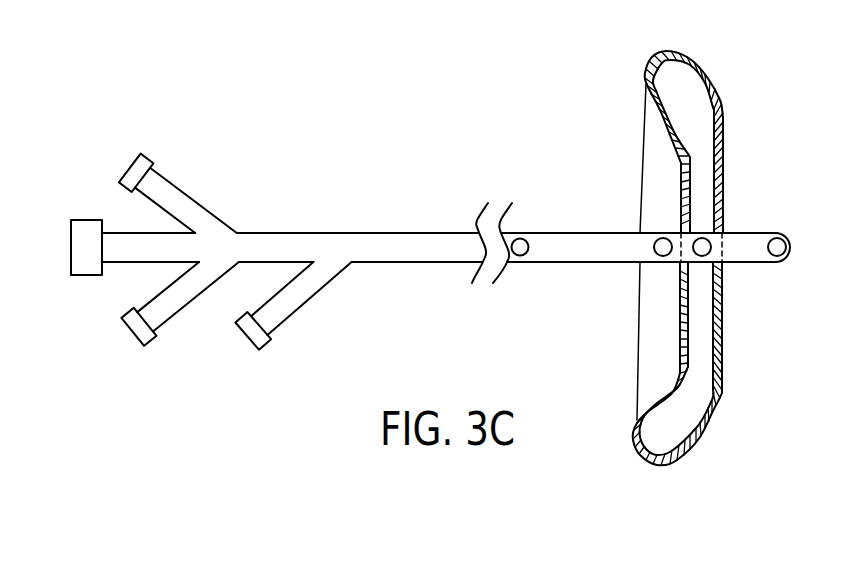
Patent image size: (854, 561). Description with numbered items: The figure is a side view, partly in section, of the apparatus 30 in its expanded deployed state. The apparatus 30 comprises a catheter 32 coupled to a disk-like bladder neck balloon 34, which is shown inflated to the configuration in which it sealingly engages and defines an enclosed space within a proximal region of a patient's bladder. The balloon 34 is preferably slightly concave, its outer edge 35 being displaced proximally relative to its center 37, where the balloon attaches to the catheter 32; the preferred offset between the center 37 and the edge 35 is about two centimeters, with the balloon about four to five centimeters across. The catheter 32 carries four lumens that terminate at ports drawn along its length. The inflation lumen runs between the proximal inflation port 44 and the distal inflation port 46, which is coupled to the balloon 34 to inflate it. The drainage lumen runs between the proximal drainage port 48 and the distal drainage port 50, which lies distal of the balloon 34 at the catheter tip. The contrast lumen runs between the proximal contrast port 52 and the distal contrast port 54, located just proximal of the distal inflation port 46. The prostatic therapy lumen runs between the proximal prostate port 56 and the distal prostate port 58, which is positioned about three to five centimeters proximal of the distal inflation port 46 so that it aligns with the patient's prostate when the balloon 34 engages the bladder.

The apparatus 30 is at (547, 161).
The catheter 32 is at (317, 246).
The bladder neck balloon 34 is at (678, 74).
The outer edge 35 is at (633, 453).
The center 37 is at (677, 283).
The proximal inflation port 44 is at (250, 329).
The distal inflation port 46 is at (701, 238).
The proximal drainage port 48 is at (80, 250).
The distal drainage port 50 is at (777, 238).
The proximal contrast port 52 is at (143, 162).
The distal contrast port 54 is at (666, 238).
The proximal prostate port 56 is at (141, 328).
The distal prostate port 58 is at (520, 250).